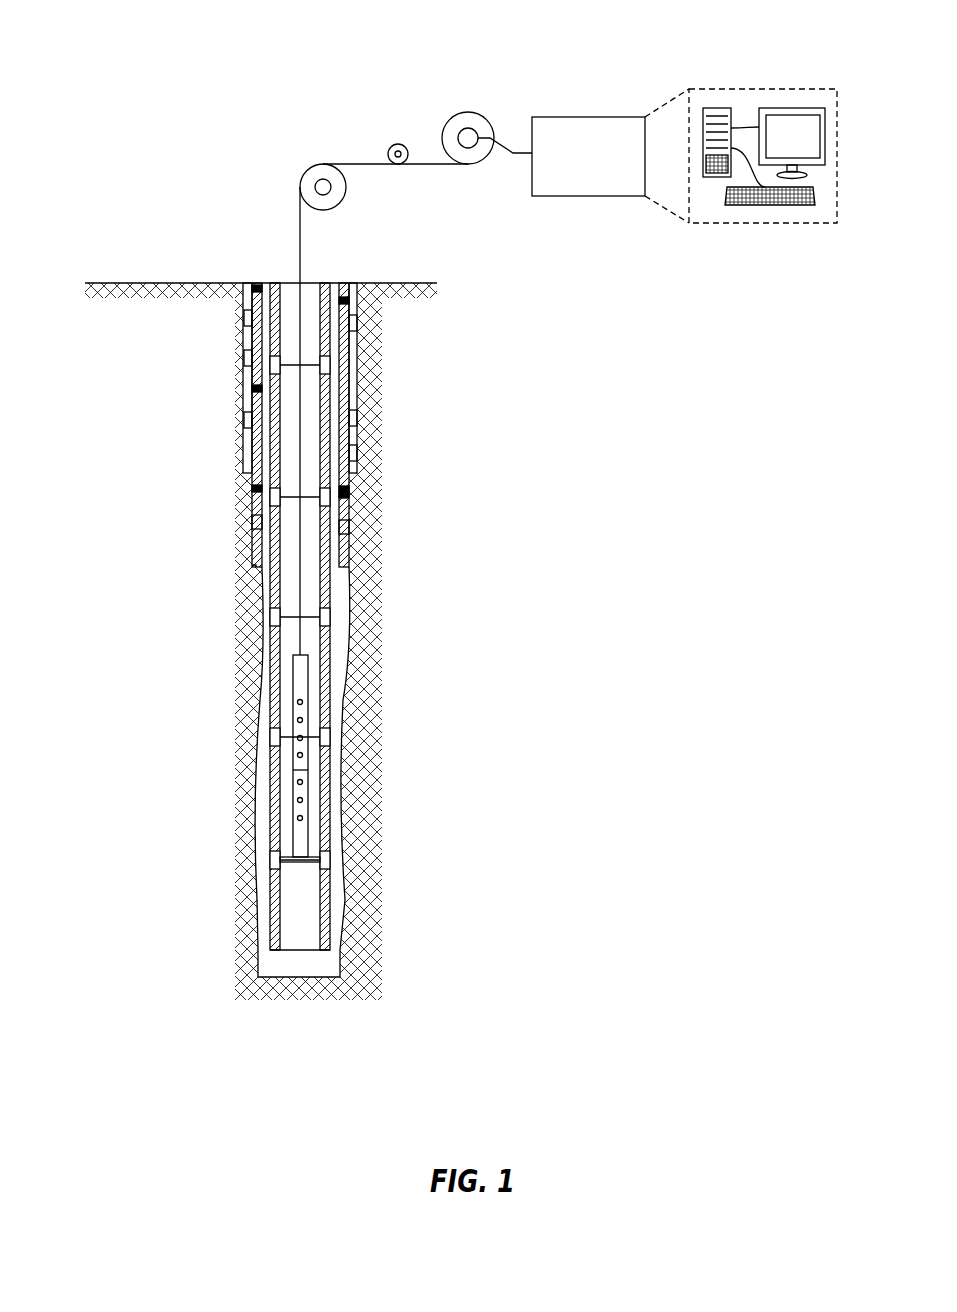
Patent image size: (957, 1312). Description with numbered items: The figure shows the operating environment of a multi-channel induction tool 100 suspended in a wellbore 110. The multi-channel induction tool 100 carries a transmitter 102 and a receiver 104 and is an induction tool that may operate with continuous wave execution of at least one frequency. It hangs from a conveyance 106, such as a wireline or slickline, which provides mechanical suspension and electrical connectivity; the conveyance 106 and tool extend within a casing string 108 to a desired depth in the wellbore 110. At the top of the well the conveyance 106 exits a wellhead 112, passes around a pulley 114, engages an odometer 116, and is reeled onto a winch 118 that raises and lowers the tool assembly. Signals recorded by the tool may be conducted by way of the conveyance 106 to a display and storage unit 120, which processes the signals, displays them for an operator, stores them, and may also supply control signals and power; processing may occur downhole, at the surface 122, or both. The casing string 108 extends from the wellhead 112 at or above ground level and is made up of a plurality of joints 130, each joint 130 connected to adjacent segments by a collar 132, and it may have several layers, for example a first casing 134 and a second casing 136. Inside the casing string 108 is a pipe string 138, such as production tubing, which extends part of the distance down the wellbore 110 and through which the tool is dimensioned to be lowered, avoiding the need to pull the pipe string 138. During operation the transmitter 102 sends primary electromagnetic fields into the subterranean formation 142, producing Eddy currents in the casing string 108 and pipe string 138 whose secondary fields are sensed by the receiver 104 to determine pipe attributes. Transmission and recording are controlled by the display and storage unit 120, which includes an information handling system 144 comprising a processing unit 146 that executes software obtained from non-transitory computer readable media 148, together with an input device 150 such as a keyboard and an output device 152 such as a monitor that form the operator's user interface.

The multi-channel induction tool 100 is at (300, 848).
The transmitter 102 is at (303, 703).
The receiver 104 is at (303, 721).
The conveyance 106 is at (302, 248).
The casing string 108 is at (228, 460).
The wellbore 110 is at (343, 570).
The wellhead 112 is at (287, 272).
The pulley 114 is at (302, 175).
The odometer 116 is at (400, 143).
The winch 118 is at (484, 116).
The display and storage unit 120 is at (590, 117).
The surface 122 is at (120, 283).
The joint 130 is at (257, 288).
The collar 132 is at (247, 318).
The first casing 134 is at (347, 494).
The second casing 136 is at (353, 454).
The pipe string 138 is at (330, 915).
The subterranean formation 142 is at (543, 554).
The information handling system 144 is at (748, 86).
The processing unit 146 is at (714, 190).
The non-transitory computer readable media 148 is at (718, 108).
The input device 150 is at (768, 205).
The output device 152 is at (793, 108).